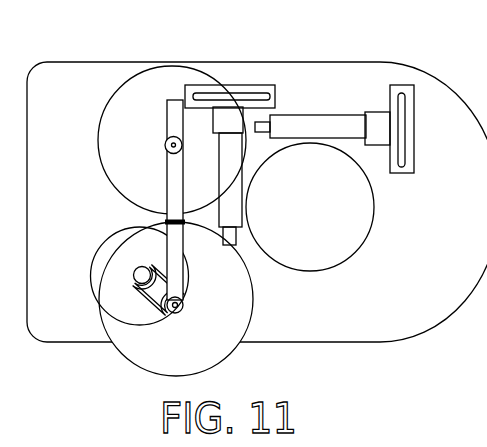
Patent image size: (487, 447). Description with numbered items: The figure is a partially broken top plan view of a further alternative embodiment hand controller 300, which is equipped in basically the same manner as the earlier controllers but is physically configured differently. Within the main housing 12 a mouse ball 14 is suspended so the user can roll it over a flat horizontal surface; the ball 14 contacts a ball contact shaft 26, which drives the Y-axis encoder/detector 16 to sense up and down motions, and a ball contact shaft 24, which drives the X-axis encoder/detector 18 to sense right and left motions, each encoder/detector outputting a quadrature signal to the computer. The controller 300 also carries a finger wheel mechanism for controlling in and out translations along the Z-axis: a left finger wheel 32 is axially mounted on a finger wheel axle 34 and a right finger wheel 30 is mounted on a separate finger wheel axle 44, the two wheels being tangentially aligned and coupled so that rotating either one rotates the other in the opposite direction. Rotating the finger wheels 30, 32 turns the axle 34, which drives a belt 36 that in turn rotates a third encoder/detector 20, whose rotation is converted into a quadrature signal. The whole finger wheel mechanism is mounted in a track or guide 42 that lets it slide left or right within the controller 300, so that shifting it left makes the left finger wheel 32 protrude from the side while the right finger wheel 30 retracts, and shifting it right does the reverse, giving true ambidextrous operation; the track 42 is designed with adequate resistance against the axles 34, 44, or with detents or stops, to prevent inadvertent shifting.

The main housing 12 is at (370, 332).
The mouse ball 14 is at (340, 248).
The Y-axis encoder/detector 16 is at (248, 90).
The X-axis encoder/detector 18 is at (407, 145).
The third encoder/detector 20 is at (100, 278).
The ball contact shaft 24 is at (317, 125).
The ball contact shaft 26 is at (230, 175).
The right finger wheel 30 is at (168, 73).
The left finger wheel 32 is at (192, 360).
The finger wheel axle 34 is at (184, 299).
The belt 36 is at (175, 318).
The track 42 is at (173, 192).
The finger wheel axle 44 is at (165, 145).
The controller 300 is at (360, 310).